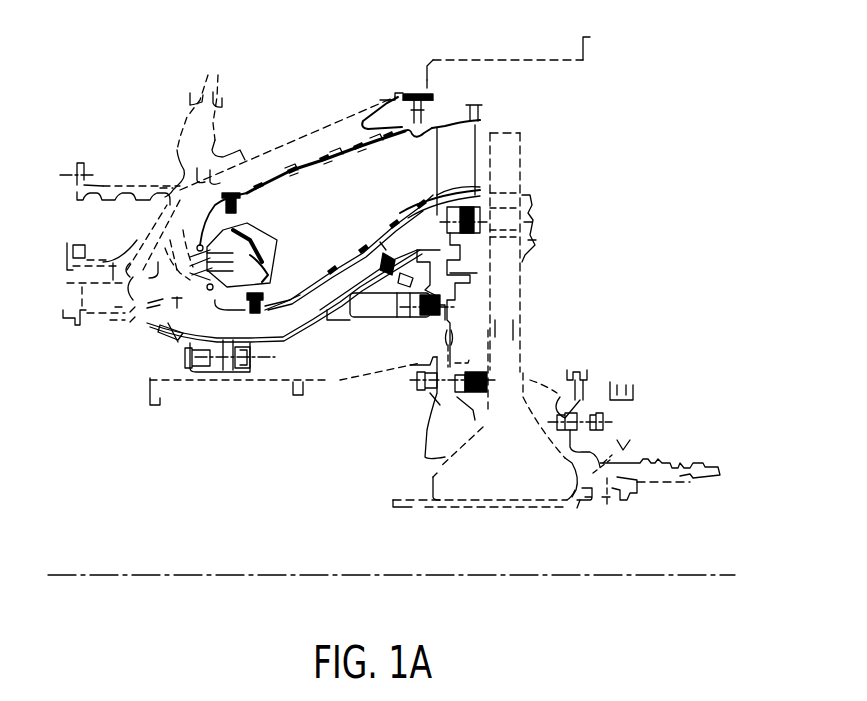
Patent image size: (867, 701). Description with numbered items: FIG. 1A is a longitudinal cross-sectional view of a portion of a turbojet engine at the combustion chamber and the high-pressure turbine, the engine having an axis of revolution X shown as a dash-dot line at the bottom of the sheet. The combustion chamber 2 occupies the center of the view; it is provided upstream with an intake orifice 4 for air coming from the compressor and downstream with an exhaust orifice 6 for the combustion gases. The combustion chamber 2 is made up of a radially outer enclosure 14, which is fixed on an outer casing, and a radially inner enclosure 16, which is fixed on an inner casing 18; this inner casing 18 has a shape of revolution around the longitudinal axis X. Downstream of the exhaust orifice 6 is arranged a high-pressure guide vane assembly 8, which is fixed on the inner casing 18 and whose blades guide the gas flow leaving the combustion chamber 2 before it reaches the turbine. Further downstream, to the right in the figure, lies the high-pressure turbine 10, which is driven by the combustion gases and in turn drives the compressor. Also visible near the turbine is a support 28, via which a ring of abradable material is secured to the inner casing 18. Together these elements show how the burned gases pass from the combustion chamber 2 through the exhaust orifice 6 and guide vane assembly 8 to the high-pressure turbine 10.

The combustion chamber 2 is at (348, 216).
The intake orifice 4 is at (262, 245).
The exhaust orifice 6 is at (420, 93).
The high-pressure guide vane assembly 8 is at (485, 135).
The high-pressure turbine 10 is at (507, 343).
The radially outer enclosure 14 is at (356, 143).
The radially inner enclosure 16 is at (318, 280).
The inner casing 18 is at (283, 338).
The support 28 is at (450, 275).
The axis of revolution X is at (73, 577).